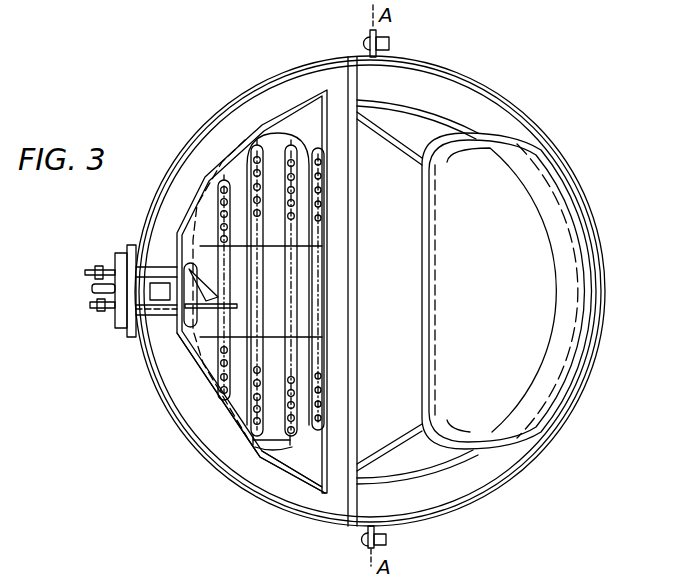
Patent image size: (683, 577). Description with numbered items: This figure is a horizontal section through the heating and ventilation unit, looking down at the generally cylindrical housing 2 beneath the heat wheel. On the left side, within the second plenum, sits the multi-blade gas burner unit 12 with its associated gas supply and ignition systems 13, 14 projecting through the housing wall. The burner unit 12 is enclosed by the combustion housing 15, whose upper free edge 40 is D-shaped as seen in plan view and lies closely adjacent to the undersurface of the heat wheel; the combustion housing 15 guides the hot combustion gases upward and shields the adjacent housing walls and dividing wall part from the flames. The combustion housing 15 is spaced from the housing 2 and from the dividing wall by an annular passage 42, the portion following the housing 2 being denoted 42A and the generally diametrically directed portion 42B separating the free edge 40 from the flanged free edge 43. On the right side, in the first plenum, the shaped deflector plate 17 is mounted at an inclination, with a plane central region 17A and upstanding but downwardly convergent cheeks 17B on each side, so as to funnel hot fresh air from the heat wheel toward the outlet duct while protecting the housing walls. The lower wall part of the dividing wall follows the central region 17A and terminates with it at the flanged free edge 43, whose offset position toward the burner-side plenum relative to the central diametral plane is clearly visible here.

The housing 2 is at (602, 254).
The multi-blade gas burner unit 12 is at (252, 380).
The gas supply system 13 is at (90, 288).
The ignition system 14 is at (87, 275).
The combustion housing 15 is at (279, 466).
The deflector plate 17 is at (384, 170).
The central region of deflector plate 17A is at (414, 386).
The cheeks of deflector plate 17B is at (378, 460).
The upper free edge of combustion housing 40 is at (297, 470).
The annular passage 42 is at (325, 271).
The housing part of annular passage 42A is at (240, 128).
The wall part of annular passage 42B is at (337, 333).
The flanged free edge 43 is at (350, 263).